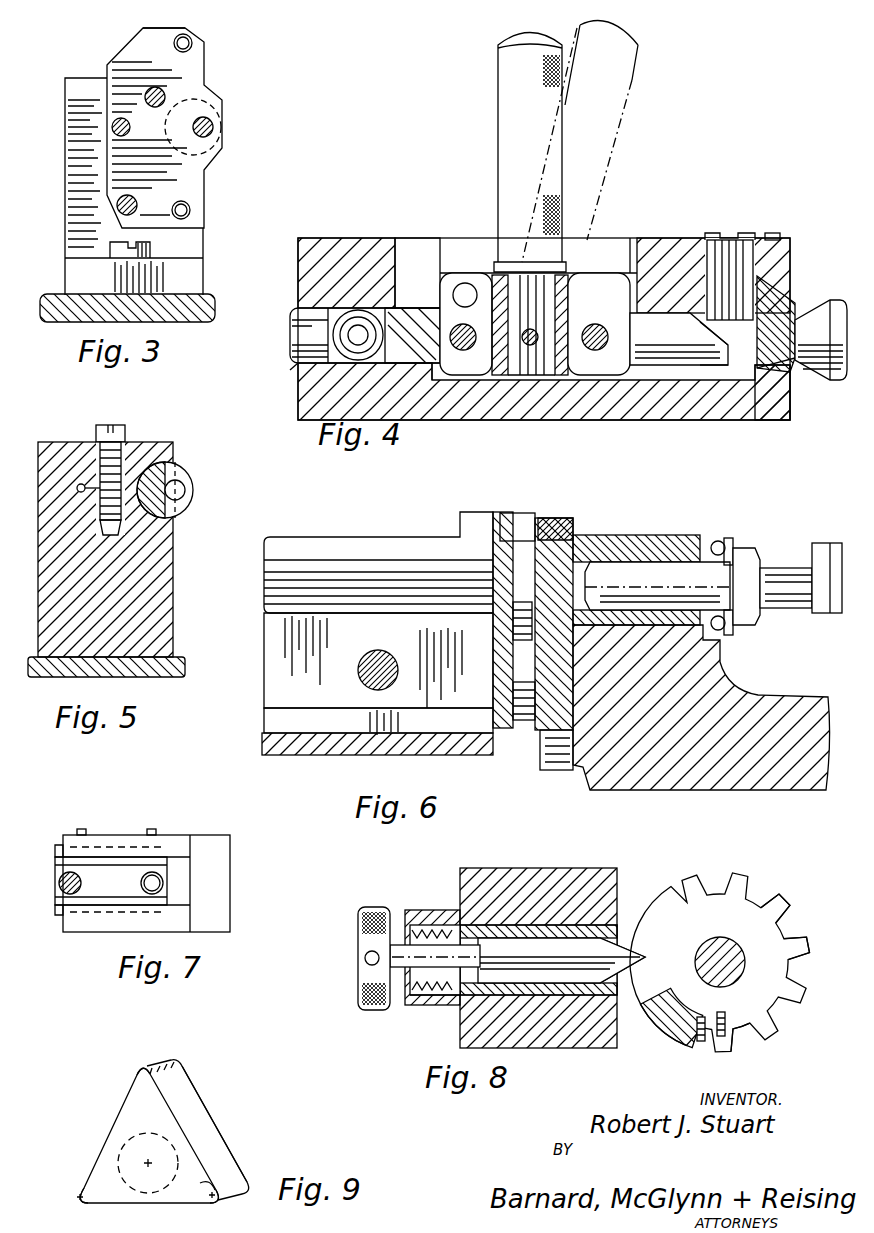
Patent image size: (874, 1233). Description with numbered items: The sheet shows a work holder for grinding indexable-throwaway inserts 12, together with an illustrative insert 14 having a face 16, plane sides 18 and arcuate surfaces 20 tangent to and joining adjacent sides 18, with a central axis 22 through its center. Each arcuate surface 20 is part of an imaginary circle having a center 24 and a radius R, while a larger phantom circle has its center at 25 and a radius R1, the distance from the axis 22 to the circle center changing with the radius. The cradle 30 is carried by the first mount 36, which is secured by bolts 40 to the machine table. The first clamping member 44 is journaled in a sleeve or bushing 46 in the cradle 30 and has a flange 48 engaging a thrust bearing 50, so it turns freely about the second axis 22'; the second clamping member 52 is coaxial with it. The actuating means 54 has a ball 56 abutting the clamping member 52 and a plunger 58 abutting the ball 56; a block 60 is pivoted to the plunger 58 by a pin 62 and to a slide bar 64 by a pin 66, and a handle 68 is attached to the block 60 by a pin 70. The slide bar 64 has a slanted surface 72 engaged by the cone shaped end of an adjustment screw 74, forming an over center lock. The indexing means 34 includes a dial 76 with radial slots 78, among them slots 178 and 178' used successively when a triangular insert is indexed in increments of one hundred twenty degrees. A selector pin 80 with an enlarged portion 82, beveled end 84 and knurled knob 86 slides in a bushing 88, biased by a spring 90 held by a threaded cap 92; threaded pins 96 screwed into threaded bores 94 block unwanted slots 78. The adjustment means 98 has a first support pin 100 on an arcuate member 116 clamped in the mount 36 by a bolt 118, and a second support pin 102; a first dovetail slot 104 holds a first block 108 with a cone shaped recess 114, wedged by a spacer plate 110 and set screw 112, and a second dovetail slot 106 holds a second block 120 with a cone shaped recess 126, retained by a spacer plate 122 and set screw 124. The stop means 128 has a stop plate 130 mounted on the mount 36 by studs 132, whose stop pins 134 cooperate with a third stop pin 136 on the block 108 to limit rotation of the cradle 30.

In FIG. 6, the indexable-throwaway inserts 12 is at (818, 540).
In FIG. 9, the indexable-throwaway insert 14 is at (112, 1111).
In FIG. 9, the face 16 is at (143, 1076).
In FIG. 9, the plane sides 18 is at (200, 1122).
In FIG. 9, the arcuate surfaces 20 is at (162, 1064).
In FIG. 9, the central axis 22 is at (127, 1156).
In FIG. 6, the second axis 22' is at (786, 606).
In FIG. 9, the center 24 is at (86, 1195).
In FIG. 9, the center 25 is at (200, 1192).
In FIG. 9, the radius R is at (78, 1197).
In FIG. 9, the radius R1 is at (212, 1187).
In FIG. 4, the cradle 30 is at (375, 238).
In FIG. 6, the cradle 30 is at (722, 668).
In FIG. 8, the cradle 30 is at (525, 868).
In FIG. 8, the indexing means 34 is at (634, 893).
In FIG. 3, the first mount 36 is at (67, 242).
In FIG. 5, the first mount 36 is at (57, 445).
In FIG. 3, the bolts 40 is at (150, 247).
In FIG. 6, the first clamping member 44 is at (710, 565).
In FIG. 6, the sleeve or bushing 46 is at (705, 545).
In FIG. 6, the flange 48 is at (748, 560).
In FIG. 6, the thrust bearing 50 is at (730, 542).
In FIG. 4, the second clamping member 52 is at (297, 368).
In FIG. 8, the second clamping member 52 is at (721, 950).
In FIG. 4, the actuating means 54 is at (627, 232).
In FIG. 4, the ball 56 is at (352, 313).
In FIG. 4, the plunger 58 is at (400, 318).
In FIG. 4, the block 60 is at (446, 300).
In FIG. 4, the pin 62 is at (462, 351).
In FIG. 4, the slide bar 64 is at (665, 325).
In FIG. 4, the pin 66 is at (592, 351).
In FIG. 4, the handle 68 is at (520, 72).
In FIG. 4, the pin 70 is at (530, 346).
In FIG. 4, the slanted surface 72 is at (702, 362).
In FIG. 4, the adjustment screw 74 is at (722, 238).
In FIG. 8, the dial 76 is at (668, 905).
In FIG. 8, the radial slots 78 is at (800, 948).
In FIG. 8, the selector pin 80 is at (398, 945).
In FIG. 8, the enlarged portion 82 is at (495, 945).
In FIG. 8, the beveled end 84 is at (625, 950).
In FIG. 8, the knurled knob 86 is at (365, 905).
In FIG. 8, the bushing 88 is at (545, 925).
In FIG. 8, the spring 90 is at (435, 992).
In FIG. 8, the threaded cap 92 is at (425, 925).
In FIG. 8, the threaded bore 94 is at (700, 1010).
In FIG. 8, the threaded pin 96 is at (697, 1033).
In FIG. 6, the adjustment means 98 is at (521, 513).
In FIG. 3, the first support pin 100 is at (213, 127).
In FIG. 5, the first support pin 100 is at (186, 490).
In FIG. 6, the first support pin 100 is at (555, 520).
In FIG. 7, the first support pin 100 is at (66, 892).
In FIG. 4, the second support pin 102 is at (810, 372).
In FIG. 7, the first dovetail slot 104 is at (178, 862).
In FIG. 4, the second dovetail slot 106 is at (780, 385).
In FIG. 6, the first block 108 is at (576, 532).
In FIG. 7, the first block 108 is at (115, 887).
In FIG. 7, the spacer plate 110 is at (62, 852).
In FIG. 7, the set screw 112 is at (80, 829).
In FIG. 6, the cone shaped recess 114 is at (565, 530).
In FIG. 5, the arcuate member 116 is at (186, 470).
In FIG. 6, the arcuate member 116 is at (368, 520).
In FIG. 5, the bolt 118 is at (125, 432).
In FIG. 4, the second block 120 is at (760, 376).
In FIG. 4, the spacer plate 122 is at (783, 290).
In FIG. 4, the set screw 124 is at (773, 238).
In FIG. 4, the cone shaped recess 126 is at (800, 318).
In FIG. 3, the stop means 128 is at (222, 53).
In FIG. 6, the stop means 128 is at (366, 682).
In FIG. 3, the stop plate 130 is at (143, 38).
In FIG. 3, the studs 132 is at (163, 100).
In FIG. 3, the stop pins 134 is at (186, 40).
In FIG. 6, the stop pins 134 is at (518, 630).
In FIG. 3, the third stop pin 136 is at (112, 127).
In FIG. 6, the third stop pin 136 is at (525, 722).
In FIG. 7, the third stop pin 136 is at (160, 885).
In FIG. 8, the slot 178 is at (792, 895).
In FIG. 8, the slot 178' is at (770, 1050).